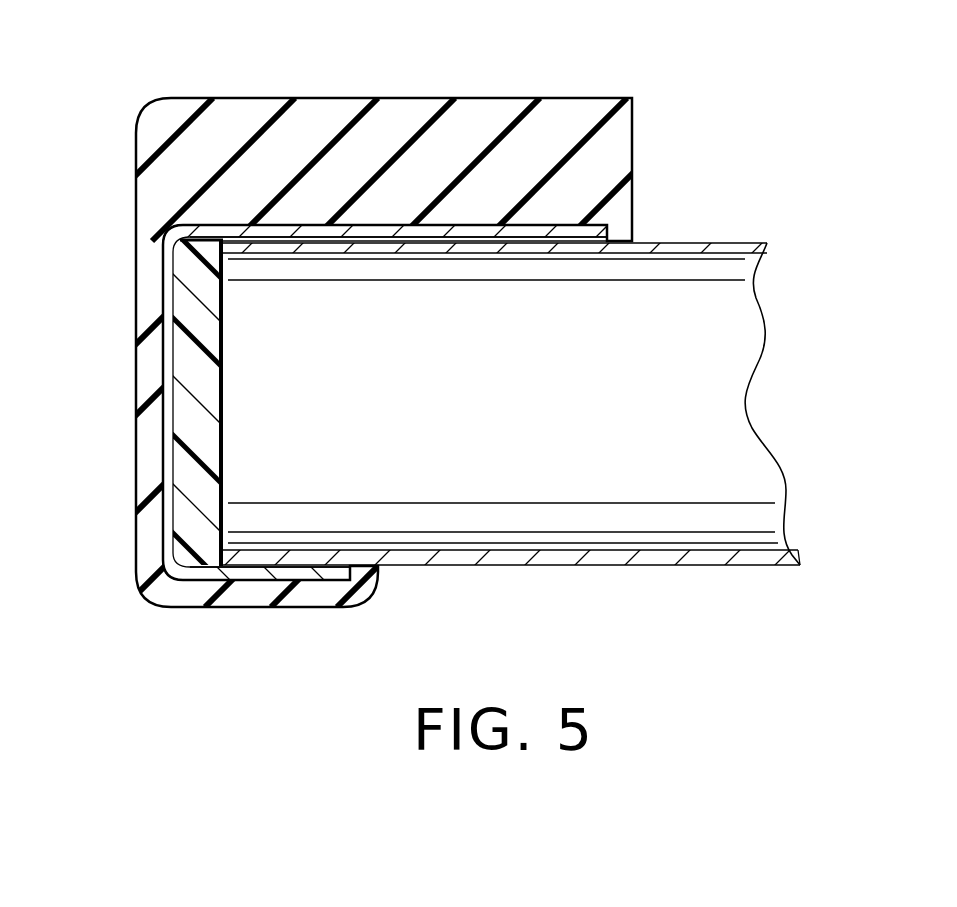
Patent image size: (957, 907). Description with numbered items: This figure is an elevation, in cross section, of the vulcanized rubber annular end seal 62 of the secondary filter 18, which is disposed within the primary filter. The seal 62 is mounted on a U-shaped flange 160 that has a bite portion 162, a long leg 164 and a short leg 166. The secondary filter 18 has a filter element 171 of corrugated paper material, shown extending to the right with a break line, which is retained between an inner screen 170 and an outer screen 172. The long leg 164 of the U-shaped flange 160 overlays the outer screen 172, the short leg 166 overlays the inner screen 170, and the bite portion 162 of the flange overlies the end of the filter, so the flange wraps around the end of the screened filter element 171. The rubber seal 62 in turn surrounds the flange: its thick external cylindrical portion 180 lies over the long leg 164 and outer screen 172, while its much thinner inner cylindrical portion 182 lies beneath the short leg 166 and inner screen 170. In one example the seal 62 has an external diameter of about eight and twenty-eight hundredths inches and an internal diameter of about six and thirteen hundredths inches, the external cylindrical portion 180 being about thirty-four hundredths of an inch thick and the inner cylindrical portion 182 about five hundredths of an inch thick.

The secondary filter 18 is at (233, 80).
The seal 62 is at (136, 230).
The U-shaped flange 160 is at (163, 382).
The bite portion 162 is at (165, 465).
The long leg 164 is at (393, 222).
The short leg 166 is at (250, 573).
The inner screen 170 is at (570, 568).
The filter element 171 is at (725, 403).
The outer screen 172 is at (676, 242).
The external cylindrical portion 180 is at (325, 103).
The inner cylindrical portion 182 is at (333, 593).